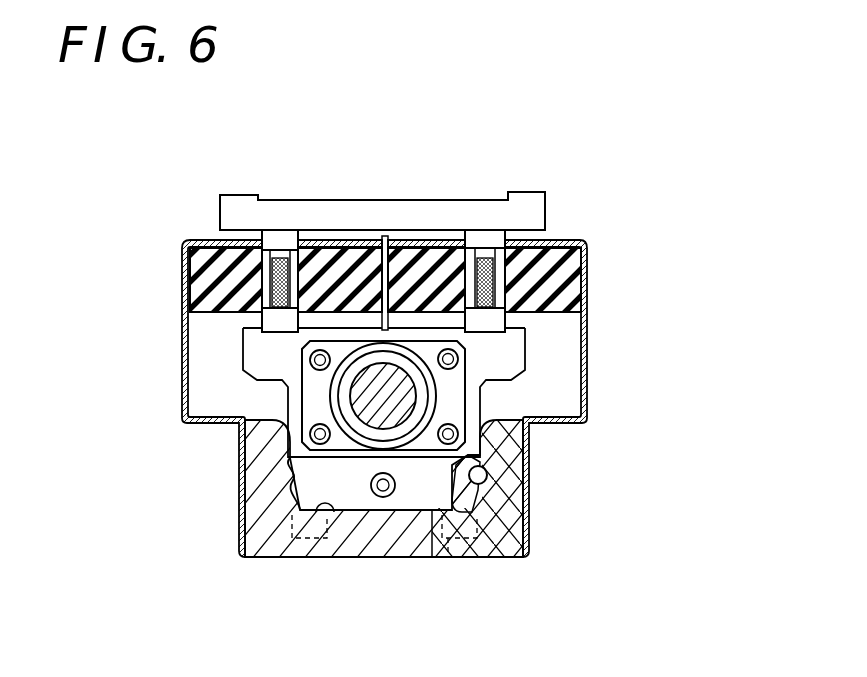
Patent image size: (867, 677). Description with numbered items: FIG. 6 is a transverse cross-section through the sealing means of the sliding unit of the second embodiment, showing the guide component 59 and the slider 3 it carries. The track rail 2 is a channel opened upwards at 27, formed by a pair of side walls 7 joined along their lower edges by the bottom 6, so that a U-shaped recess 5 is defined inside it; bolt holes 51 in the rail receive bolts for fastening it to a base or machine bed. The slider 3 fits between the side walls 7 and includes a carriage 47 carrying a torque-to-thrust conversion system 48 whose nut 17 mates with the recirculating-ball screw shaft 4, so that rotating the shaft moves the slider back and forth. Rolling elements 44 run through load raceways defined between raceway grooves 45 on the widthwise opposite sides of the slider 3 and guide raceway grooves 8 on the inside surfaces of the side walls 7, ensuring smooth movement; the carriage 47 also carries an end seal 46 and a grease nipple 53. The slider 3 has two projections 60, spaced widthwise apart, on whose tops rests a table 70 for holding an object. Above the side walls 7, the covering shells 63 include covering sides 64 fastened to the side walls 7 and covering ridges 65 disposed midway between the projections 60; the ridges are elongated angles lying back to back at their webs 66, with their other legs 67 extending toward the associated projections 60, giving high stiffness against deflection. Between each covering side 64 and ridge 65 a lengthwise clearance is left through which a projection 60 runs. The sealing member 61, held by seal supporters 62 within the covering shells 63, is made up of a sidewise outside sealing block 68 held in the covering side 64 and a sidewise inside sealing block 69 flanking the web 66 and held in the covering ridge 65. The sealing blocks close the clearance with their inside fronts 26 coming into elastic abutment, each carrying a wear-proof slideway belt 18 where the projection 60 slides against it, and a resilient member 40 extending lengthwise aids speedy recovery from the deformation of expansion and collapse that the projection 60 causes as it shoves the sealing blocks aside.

The track rail 2 is at (248, 560).
The slider 3 is at (265, 362).
The recirculating-ball screw shaft 4 is at (378, 407).
The recess 5 is at (333, 507).
The bottom 6 is at (410, 515).
The side walls 7 is at (268, 503).
The guide raceway grooves 8 is at (487, 481).
The nut 17 is at (433, 408).
The wear-proof slideway belt 18 is at (232, 196).
The inside fronts 26 is at (283, 243).
The upward channel opening 27 is at (533, 426).
The resilient member 40 is at (183, 243).
The rolling elements 44 is at (484, 487).
The raceway grooves 45 is at (470, 505).
The end seal 46 is at (420, 482).
The carriage 47 is at (318, 458).
The torque-to-thrust conversion system 48 is at (449, 392).
The bolt holes 51 is at (303, 557).
The grease nipple 53 is at (383, 497).
The guide component 59 is at (577, 430).
The projections 60 is at (272, 243).
The sealing member 61 is at (588, 247).
The seal supporters 62 is at (305, 262).
The covering shells 63 is at (390, 240).
The covering sides 64 is at (588, 317).
The covering ridges 65 is at (378, 240).
The webs 66 is at (333, 262).
The legs 67 is at (372, 262).
The outside sealing block 68 is at (588, 267).
The inside sealing block 69 is at (290, 262).
The table 70 is at (540, 232).